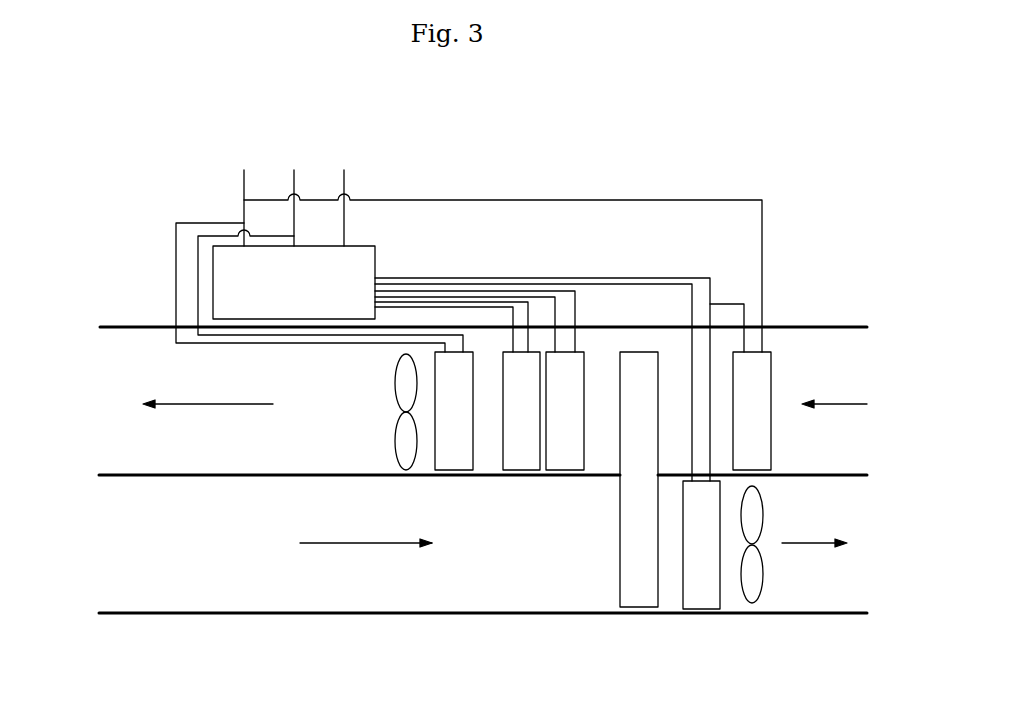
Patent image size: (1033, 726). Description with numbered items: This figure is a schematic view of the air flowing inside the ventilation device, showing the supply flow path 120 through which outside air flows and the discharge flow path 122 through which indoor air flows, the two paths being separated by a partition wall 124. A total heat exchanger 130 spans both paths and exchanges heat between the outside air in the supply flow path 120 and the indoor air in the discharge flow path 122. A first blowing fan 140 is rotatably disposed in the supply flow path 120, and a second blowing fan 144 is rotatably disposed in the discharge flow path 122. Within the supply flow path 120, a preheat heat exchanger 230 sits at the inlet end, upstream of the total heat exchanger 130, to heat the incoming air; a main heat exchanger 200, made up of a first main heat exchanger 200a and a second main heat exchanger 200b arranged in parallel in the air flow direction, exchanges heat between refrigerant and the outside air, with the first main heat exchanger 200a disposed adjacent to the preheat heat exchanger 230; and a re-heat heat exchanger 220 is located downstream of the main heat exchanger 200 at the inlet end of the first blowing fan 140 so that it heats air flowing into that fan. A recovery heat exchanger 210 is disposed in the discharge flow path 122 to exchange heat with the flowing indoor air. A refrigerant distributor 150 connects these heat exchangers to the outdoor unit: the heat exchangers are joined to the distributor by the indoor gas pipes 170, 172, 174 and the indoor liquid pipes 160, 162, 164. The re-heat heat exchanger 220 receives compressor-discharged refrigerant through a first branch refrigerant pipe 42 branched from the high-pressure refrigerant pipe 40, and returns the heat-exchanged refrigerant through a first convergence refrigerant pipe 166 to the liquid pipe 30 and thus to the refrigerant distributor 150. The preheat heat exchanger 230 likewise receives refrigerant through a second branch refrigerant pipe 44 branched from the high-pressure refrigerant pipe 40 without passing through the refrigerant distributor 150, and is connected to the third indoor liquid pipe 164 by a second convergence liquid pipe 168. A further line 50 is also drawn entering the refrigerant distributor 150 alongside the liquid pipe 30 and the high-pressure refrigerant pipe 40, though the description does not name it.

The liquid pipe 30 is at (294, 190).
The high-pressure refrigerant pipe 40 is at (244, 190).
The first branch refrigerant pipe 42 is at (176, 285).
The second branch refrigerant pipe 44 is at (265, 200).
The input signal line 50 is at (344, 190).
The supply flow path 120 is at (833, 360).
The discharge flow path 122 is at (540, 553).
The partition wall 124 is at (117, 476).
The total heat exchanger 130 is at (642, 590).
The first blowing fan 140 is at (405, 443).
The second blowing fan 144 is at (752, 583).
The refrigerant distributor 150 is at (357, 272).
The indoor liquid pipe 160 is at (497, 313).
The indoor liquid pipe 162 is at (425, 307).
The third indoor liquid pipe 164 is at (710, 279).
The first convergence refrigerant pipe 166 is at (198, 255).
The second convergence liquid pipe 168 is at (735, 298).
The indoor gas pipe 170 is at (523, 307).
The indoor gas pipe 172 is at (455, 298).
The indoor gas pipe 174 is at (683, 278).
The main heat exchanger 200 is at (610, 133).
The first main heat exchanger 200a is at (522, 365).
The second main heat exchanger 200b is at (578, 365).
The recovery heat exchanger 210 is at (702, 593).
The re-heat heat exchanger 220 is at (460, 455).
The preheat heat exchanger 230 is at (755, 370).